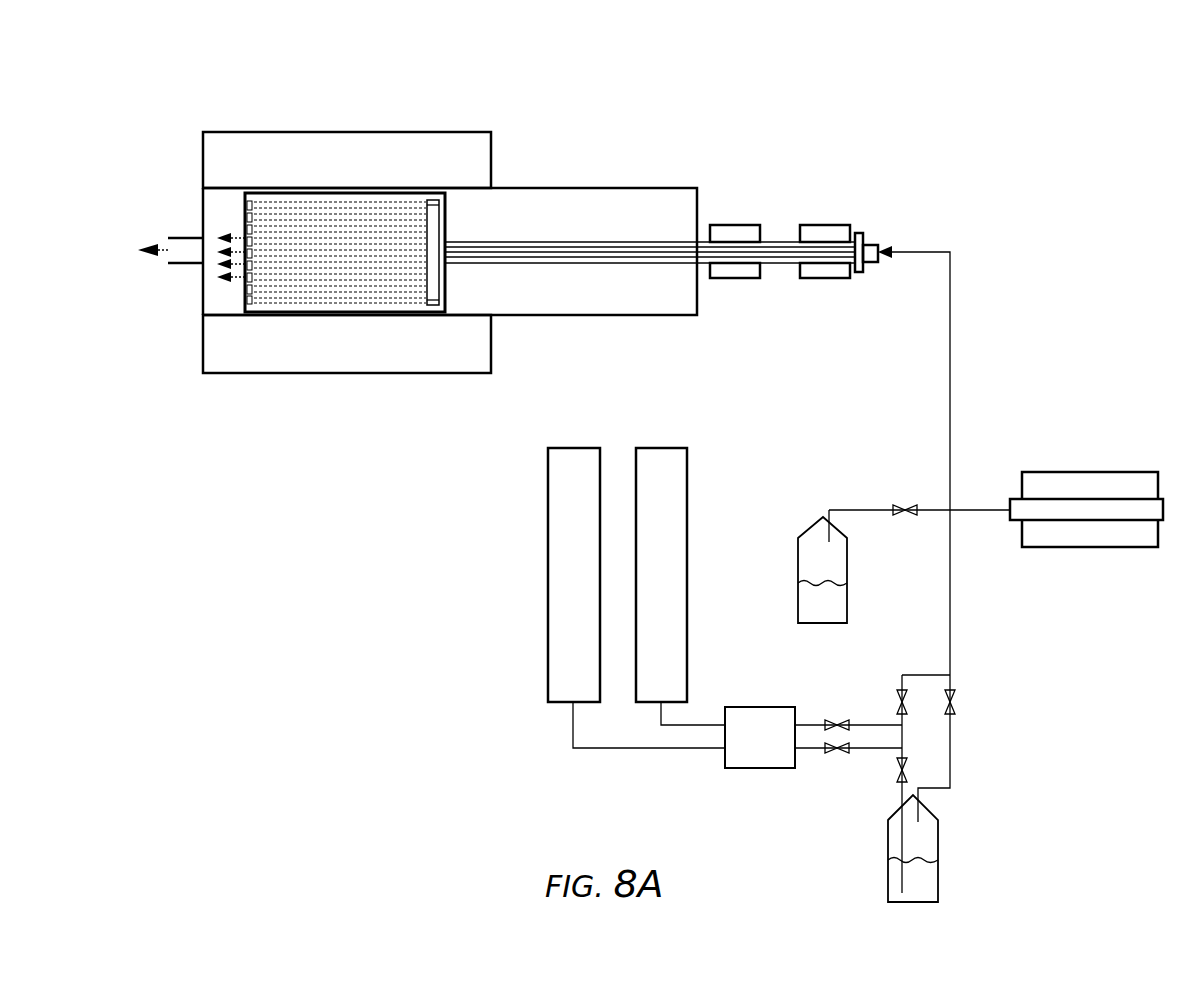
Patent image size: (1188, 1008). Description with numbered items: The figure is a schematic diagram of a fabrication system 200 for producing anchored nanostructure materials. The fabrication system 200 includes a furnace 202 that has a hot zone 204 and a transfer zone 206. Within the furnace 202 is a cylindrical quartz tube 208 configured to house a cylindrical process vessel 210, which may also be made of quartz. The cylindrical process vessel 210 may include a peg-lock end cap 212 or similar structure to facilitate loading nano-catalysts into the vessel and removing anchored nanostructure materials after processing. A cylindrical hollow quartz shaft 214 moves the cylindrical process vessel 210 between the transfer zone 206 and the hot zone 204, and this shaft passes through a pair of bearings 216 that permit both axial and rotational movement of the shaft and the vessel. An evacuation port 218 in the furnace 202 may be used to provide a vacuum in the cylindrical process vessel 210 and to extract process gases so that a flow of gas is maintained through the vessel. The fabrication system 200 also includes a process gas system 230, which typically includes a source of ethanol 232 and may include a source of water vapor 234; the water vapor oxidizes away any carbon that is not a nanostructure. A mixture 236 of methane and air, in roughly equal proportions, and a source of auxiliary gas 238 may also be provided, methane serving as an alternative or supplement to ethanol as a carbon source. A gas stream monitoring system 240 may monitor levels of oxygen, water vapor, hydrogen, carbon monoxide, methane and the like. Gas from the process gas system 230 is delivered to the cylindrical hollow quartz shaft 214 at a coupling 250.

The fabrication system 200 is at (968, 96).
The furnace 202 is at (529, 71).
The hot zone 204 is at (315, 389).
The transfer zone 206 is at (537, 320).
The cylindrical quartz tube 208 is at (522, 186).
The cylindrical process vessel 210 is at (360, 190).
The peg-lock end cap 212 is at (462, 205).
The cylindrical hollow quartz shaft 214 is at (670, 240).
The bearings 216 is at (748, 224).
The evacuation port 218 is at (183, 233).
The process gas system 230 is at (974, 597).
The source of ethanol 232 is at (803, 532).
The source of water vapor 234 is at (887, 835).
The mixture of methane and air 236 is at (655, 447).
The source of auxiliary gas 238 is at (547, 535).
The gas stream monitoring system 240 is at (1065, 471).
The coupling 250 is at (906, 216).